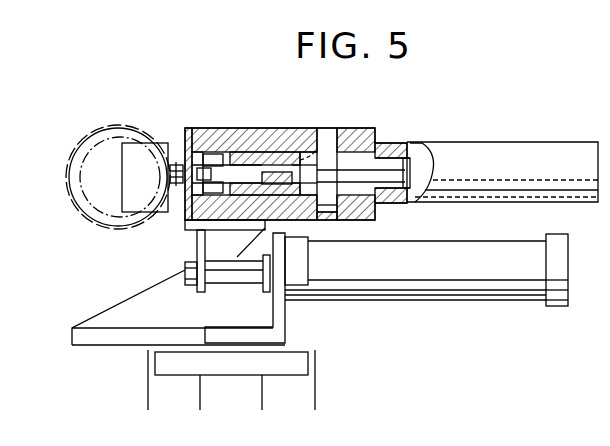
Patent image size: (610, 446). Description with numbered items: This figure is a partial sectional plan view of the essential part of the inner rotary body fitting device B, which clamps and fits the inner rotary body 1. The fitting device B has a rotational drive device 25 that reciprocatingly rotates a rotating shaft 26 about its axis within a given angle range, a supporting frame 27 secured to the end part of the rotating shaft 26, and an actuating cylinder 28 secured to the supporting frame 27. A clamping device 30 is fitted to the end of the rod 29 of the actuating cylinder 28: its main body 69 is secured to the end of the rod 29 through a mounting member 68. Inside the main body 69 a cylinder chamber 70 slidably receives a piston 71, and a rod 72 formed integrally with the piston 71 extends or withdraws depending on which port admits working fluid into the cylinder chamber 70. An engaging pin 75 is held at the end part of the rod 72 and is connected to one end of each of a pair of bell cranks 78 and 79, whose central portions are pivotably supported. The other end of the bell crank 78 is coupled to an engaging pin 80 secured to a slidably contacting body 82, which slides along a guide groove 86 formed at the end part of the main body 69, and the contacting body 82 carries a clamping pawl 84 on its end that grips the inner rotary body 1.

The inner rotary body 1 is at (102, 128).
The clamping pawl 84 is at (143, 145).
The slidably contacting body 82 is at (190, 152).
The guide groove 86 is at (215, 153).
The clamping device 30 is at (262, 126).
The cylinder chamber 70 is at (313, 136).
The piston 71 is at (340, 146).
The engaging pin 75 is at (298, 163).
The bell crank 78 is at (264, 166).
The bell crank 79 is at (273, 196).
The rod 72 is at (300, 193).
The engaging pin 80 is at (206, 200).
The main body 69 is at (478, 150).
The inner rotary body fitting device B is at (409, 122).
The mounting member 68 is at (197, 243).
The rod 29 is at (235, 277).
The rotating shaft 26 is at (213, 345).
The supporting frame 27 is at (282, 314).
The actuating cylinder 28 is at (432, 291).
The rotational drive device 25 is at (322, 391).